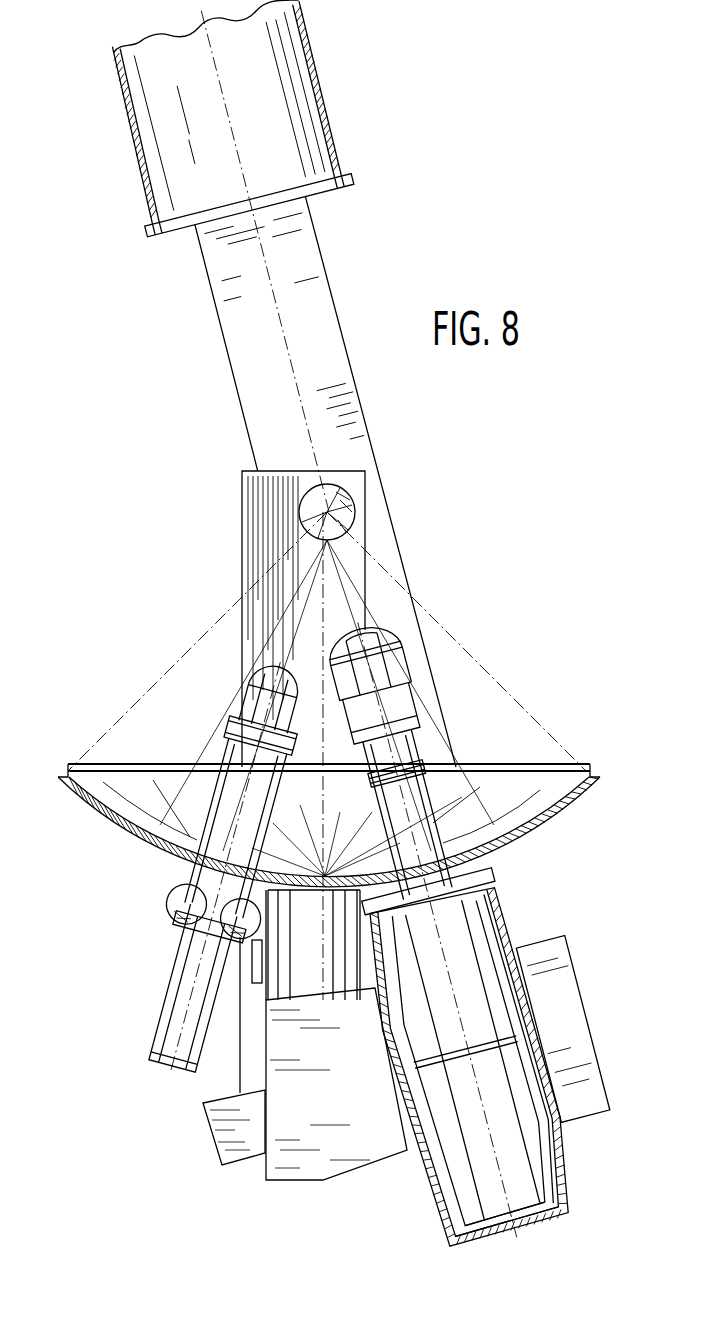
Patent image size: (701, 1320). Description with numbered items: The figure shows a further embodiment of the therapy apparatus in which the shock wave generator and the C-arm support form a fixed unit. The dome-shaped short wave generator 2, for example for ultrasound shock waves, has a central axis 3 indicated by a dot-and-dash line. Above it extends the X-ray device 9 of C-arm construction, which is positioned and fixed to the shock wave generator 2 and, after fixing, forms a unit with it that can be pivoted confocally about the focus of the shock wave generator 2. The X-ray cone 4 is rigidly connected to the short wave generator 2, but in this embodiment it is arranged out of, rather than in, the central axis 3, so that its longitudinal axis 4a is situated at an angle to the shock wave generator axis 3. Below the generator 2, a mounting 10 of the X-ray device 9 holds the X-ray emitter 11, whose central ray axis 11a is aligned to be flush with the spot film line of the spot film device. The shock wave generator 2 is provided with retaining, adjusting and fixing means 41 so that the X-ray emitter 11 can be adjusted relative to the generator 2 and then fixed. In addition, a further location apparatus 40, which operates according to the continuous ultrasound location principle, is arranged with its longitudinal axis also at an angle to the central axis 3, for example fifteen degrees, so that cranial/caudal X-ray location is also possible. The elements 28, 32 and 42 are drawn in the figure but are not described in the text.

The short wave generator 2 is at (548, 820).
The central axis 3 is at (327, 790).
The X-ray cone 4 is at (392, 706).
The longitudinal axis 4a is at (374, 600).
The X-ray device 9 is at (231, 370).
The mounting 10 is at (562, 1172).
The X-ray emitter 11 is at (532, 1146).
The central ray axis 11a is at (516, 1232).
The pivot 28 is at (352, 518).
The tube 32 is at (286, 88).
The location apparatus 40 is at (205, 895).
The retaining, adjusting and fixing means 41 is at (378, 1145).
The clamp 42 is at (403, 1128).